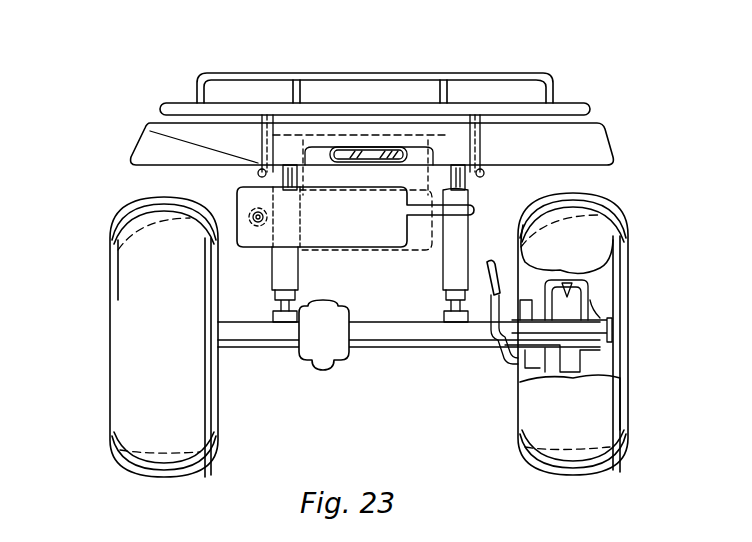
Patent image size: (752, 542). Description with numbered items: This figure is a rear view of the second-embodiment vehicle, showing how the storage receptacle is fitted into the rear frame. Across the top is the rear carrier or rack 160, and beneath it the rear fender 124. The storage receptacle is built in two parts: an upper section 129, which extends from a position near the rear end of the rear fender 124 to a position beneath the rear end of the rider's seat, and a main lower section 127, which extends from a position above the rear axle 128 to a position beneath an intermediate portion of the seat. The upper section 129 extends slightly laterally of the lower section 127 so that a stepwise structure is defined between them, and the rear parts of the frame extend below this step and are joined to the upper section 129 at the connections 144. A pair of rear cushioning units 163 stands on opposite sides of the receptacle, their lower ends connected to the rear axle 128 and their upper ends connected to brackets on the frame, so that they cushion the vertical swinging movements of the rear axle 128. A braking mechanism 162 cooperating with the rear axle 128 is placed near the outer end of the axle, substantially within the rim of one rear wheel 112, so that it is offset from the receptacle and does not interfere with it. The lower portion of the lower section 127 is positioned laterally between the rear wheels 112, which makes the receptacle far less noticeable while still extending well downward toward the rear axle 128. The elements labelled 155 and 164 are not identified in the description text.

The rear wheel 112 is at (628, 432).
The rear fender 124 is at (607, 130).
The lower section 127 is at (428, 240).
The rear axle 128 is at (417, 343).
The upper section 129 is at (447, 145).
The connections 144 is at (150, 131).
The mounting bracket 155 is at (257, 178).
The rear carrier or rack 160 is at (583, 107).
The braking mechanism 162 is at (592, 303).
The rear cushioning units 163 is at (268, 262).
The differential 164 is at (313, 345).